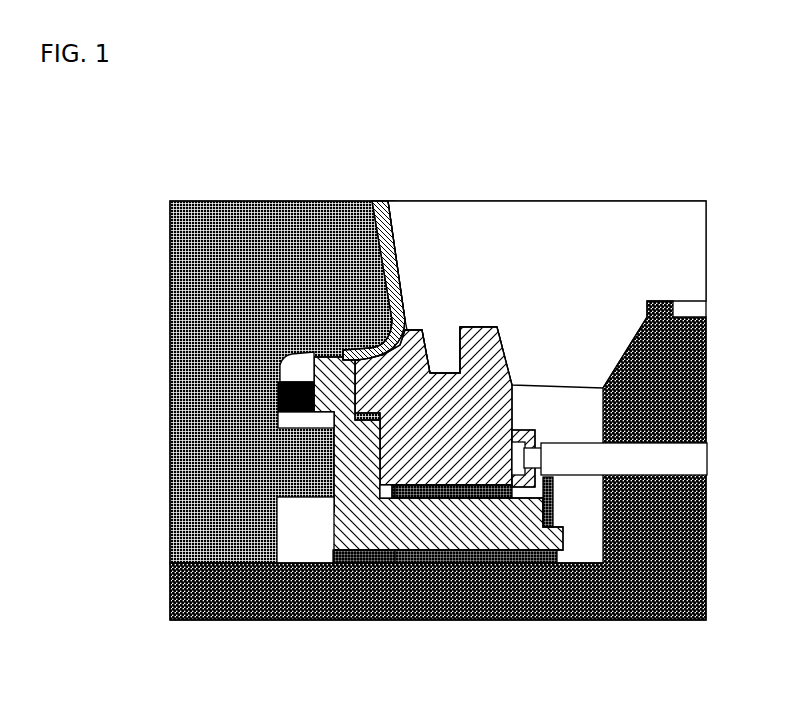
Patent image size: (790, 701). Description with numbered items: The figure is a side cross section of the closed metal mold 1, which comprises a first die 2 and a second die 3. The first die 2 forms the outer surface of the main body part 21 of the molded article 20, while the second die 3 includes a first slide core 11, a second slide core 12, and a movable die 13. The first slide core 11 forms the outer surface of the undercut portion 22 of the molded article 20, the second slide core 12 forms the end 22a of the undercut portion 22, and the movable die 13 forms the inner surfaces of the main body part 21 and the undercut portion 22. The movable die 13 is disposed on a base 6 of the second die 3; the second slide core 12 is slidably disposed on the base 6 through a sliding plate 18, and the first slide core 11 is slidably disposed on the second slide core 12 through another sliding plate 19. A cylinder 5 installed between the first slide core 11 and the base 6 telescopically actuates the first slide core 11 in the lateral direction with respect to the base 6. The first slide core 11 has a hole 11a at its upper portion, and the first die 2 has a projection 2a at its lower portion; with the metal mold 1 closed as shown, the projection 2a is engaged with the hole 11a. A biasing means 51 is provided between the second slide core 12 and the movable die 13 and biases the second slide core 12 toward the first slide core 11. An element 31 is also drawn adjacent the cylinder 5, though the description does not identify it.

The metal mold 1 is at (684, 181).
The first die 2 is at (590, 212).
The projection 2a is at (416, 327).
The second die 3 is at (160, 545).
The cylinder 5 is at (582, 452).
The base 6 is at (549, 612).
The first slide core 11 is at (513, 411).
The hole 11a is at (457, 352).
The second slide core 12 is at (310, 528).
The movable die 13 is at (180, 383).
The sliding plate 18 is at (402, 556).
The sliding plate 19 is at (460, 500).
The molded article 20 is at (383, 207).
The main body part 21 is at (412, 325).
The undercut portion 22 is at (378, 338).
The end of the undercut portion 22a is at (341, 347).
The spacer 31 is at (554, 502).
The biasing means 51 is at (300, 375).